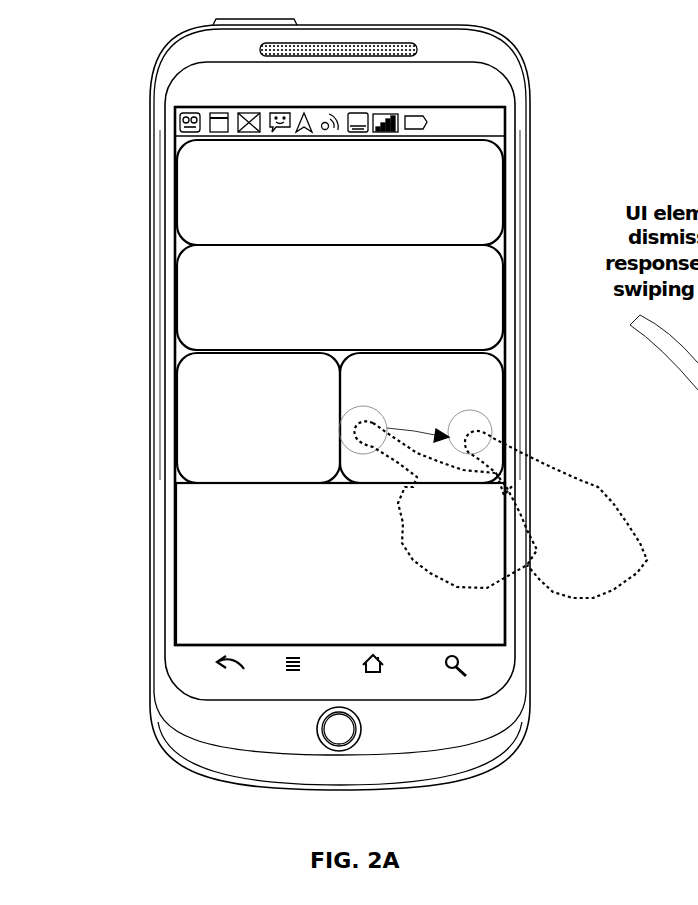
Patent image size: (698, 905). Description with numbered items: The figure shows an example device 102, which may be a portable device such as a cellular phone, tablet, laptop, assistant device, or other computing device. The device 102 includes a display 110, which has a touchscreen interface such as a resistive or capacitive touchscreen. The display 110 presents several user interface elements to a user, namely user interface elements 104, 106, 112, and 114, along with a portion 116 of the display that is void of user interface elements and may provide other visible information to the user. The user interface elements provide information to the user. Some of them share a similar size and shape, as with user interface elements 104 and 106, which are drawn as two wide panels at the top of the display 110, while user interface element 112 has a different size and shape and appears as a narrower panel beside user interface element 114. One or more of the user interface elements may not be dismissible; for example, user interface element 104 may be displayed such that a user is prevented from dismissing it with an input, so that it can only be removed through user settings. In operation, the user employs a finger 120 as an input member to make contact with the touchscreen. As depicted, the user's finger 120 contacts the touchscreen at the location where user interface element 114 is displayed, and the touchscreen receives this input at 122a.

The device 102 is at (515, 40).
The user interface element 104 is at (340, 193).
The user interface element 106 is at (340, 298).
The display 110 is at (505, 237).
The user interface element 112 is at (257, 418).
The user interface element 114 is at (422, 418).
The portion of the display 116 is at (340, 563).
The finger 120 is at (600, 487).
The input 122a is at (357, 405).